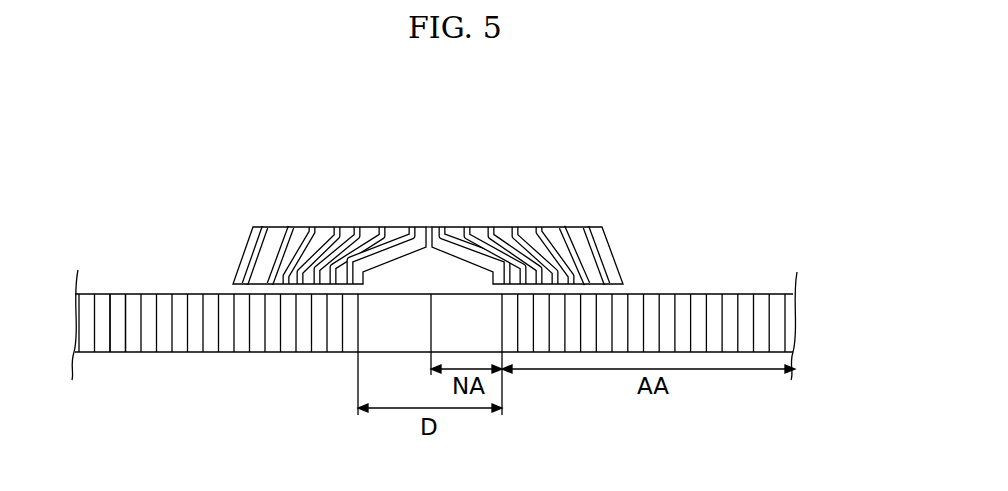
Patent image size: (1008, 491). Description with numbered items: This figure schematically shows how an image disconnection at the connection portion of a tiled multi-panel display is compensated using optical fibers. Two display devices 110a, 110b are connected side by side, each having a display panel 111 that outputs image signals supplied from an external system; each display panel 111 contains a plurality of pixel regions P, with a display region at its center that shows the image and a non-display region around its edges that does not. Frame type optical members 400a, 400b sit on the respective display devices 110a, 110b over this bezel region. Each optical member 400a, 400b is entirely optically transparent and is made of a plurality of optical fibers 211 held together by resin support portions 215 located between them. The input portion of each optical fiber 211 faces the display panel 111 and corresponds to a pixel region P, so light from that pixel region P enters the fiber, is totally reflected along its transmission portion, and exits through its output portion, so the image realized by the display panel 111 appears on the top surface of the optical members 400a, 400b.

The frame type optical member 400a is at (308, 190).
The frame type optical member 400b is at (560, 212).
The optical fiber 211 is at (306, 226).
The resin support portion 215 is at (363, 221).
The display panel 111 is at (474, 371).
The display device 110a is at (200, 372).
The display device 110b is at (717, 386).
The pixel region P is at (117, 345).